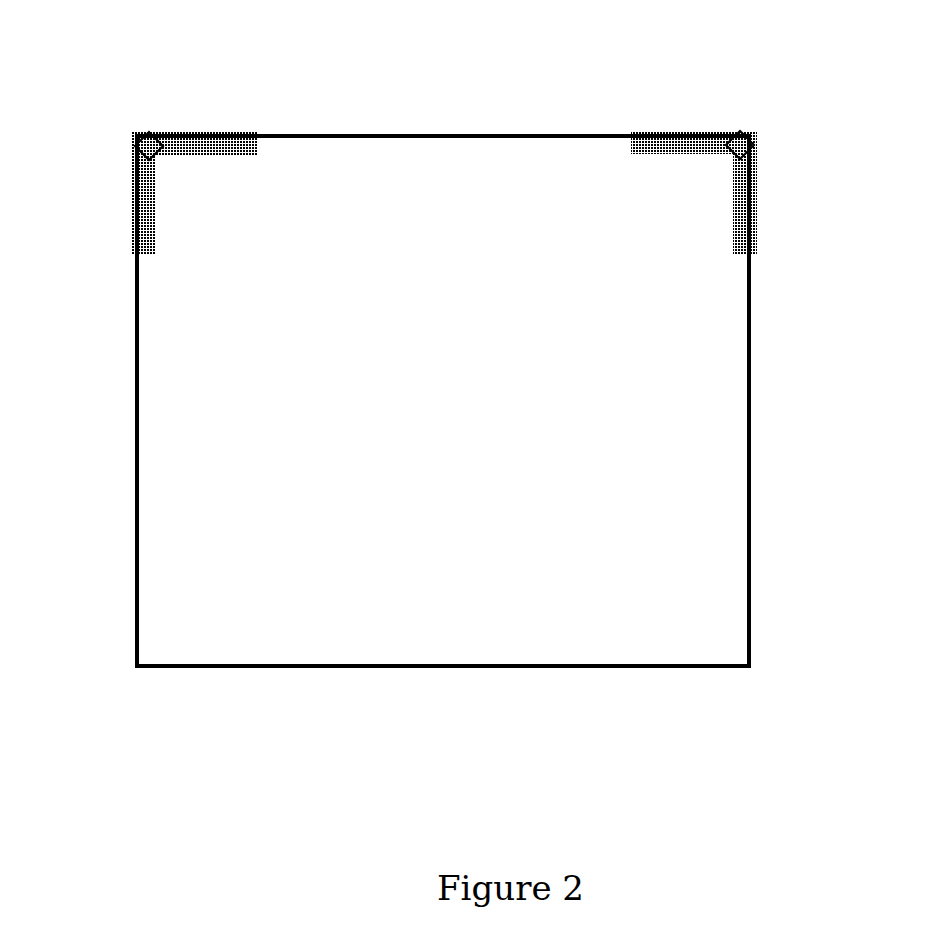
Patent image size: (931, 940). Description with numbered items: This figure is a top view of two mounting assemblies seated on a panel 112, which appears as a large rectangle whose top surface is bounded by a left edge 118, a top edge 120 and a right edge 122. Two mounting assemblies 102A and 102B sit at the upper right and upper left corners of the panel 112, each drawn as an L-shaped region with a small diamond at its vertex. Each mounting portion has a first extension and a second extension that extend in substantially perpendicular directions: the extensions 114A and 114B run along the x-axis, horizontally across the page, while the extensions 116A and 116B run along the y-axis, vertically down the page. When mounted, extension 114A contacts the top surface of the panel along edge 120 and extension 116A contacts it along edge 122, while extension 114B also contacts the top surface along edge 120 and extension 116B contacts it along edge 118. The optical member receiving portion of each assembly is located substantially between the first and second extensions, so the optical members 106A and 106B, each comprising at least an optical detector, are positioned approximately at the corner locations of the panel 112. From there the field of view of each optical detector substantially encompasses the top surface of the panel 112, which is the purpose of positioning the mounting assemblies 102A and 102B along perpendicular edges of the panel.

The panel 112 is at (687, 519).
The edge 118 is at (132, 428).
The edge 120 is at (396, 136).
The edge 122 is at (750, 383).
The first extension 114A is at (692, 142).
The first extension 114B is at (232, 142).
The second extension 116A is at (742, 213).
The second extension 116B is at (140, 214).
The mounting assembly 102A is at (755, 132).
The mounting assembly 102B is at (134, 136).
The optical member 106A is at (752, 143).
The optical member 106B is at (152, 146).